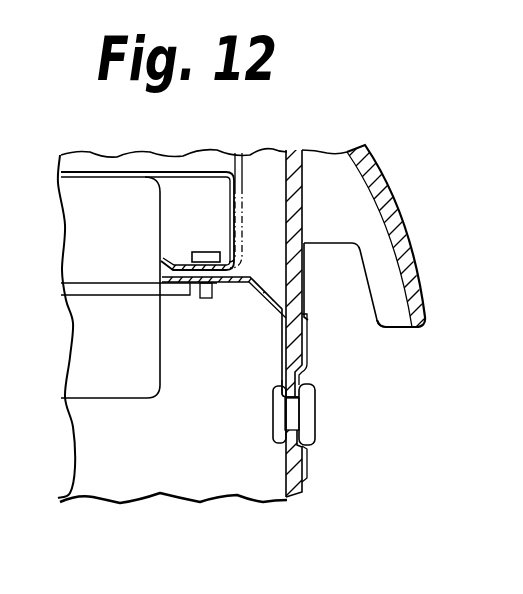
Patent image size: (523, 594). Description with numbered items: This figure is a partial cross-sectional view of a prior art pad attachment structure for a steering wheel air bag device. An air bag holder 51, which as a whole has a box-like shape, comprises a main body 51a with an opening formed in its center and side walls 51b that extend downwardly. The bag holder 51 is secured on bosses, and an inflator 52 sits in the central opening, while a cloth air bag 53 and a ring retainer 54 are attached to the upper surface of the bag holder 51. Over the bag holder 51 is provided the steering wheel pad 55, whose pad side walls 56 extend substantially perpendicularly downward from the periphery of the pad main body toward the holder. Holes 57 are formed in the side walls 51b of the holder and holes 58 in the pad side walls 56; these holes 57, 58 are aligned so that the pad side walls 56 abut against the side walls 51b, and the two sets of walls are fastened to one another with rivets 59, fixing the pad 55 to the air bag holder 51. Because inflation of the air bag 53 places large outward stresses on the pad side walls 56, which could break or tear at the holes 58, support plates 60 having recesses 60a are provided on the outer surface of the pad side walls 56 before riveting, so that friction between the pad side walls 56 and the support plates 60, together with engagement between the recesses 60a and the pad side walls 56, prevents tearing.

The air bag holder 51 is at (262, 311).
The main body 51a is at (222, 284).
The side walls 51b is at (281, 388).
The inflator 52 is at (128, 399).
The air bag 53 is at (245, 220).
The ring retainer 54 is at (176, 258).
The steering wheel pad 55 is at (334, 146).
The pad side walls 56 is at (306, 262).
The holes 57 is at (273, 428).
The holes 58 is at (309, 433).
The rivets 59 is at (316, 393).
The support plates 60 is at (309, 326).
The recesses 60a is at (306, 456).